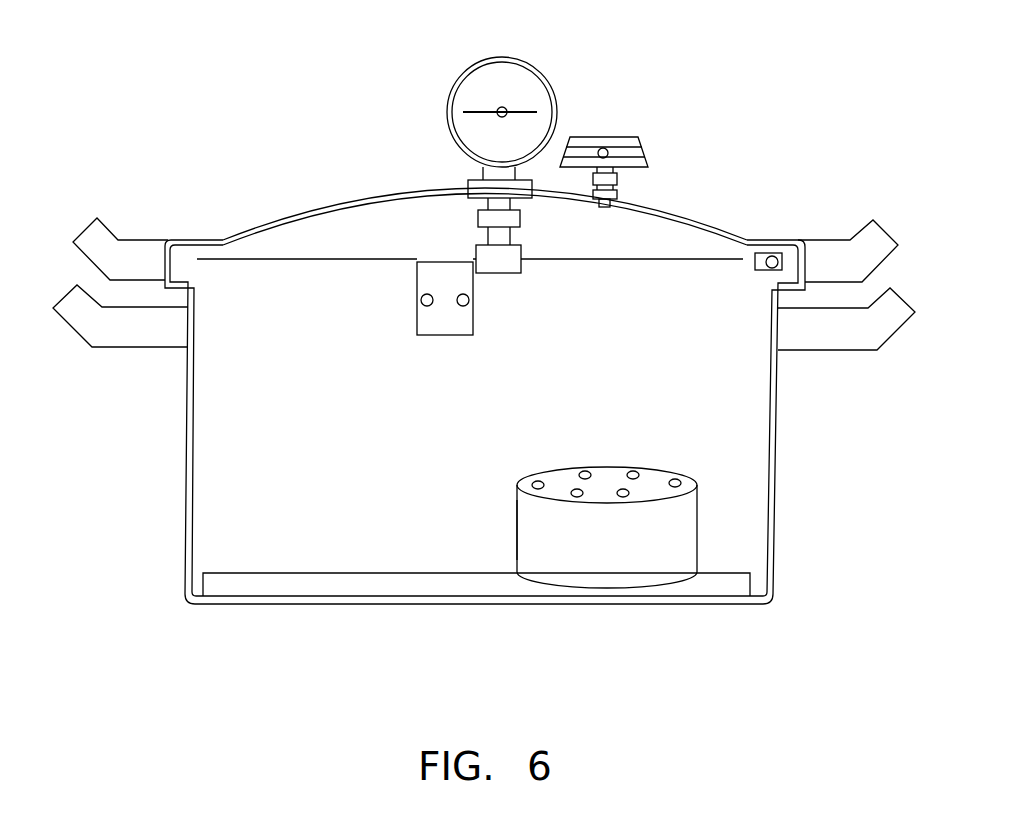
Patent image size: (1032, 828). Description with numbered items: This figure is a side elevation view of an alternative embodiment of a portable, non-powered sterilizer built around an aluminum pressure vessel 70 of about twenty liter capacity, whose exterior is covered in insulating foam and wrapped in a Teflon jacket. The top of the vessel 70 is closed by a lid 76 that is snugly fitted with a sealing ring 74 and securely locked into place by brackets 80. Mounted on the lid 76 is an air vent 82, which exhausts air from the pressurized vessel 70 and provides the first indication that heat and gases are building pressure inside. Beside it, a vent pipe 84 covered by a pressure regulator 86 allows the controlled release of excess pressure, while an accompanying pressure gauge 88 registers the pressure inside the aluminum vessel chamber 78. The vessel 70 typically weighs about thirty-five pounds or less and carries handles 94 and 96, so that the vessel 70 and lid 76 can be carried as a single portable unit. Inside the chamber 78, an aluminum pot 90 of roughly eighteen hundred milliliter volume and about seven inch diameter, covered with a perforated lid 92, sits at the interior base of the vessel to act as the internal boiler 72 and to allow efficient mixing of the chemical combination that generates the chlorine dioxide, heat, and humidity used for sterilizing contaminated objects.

The aluminum pressure vessel 70 is at (772, 527).
The internal boiler 72 is at (622, 573).
The sealing ring 74 is at (777, 250).
The lid 76 is at (678, 200).
The aluminum vessel chamber 78 is at (300, 482).
The brackets 80 is at (413, 297).
The air vent 82 is at (477, 218).
The vent pipe 84 is at (607, 150).
The pressure regulator 86 is at (603, 133).
The pressure gauge 88 is at (502, 56).
The aluminum pot 90 is at (557, 503).
The perforated lid 92 is at (680, 482).
The handles 94 is at (138, 245).
The handles 96 is at (140, 337).